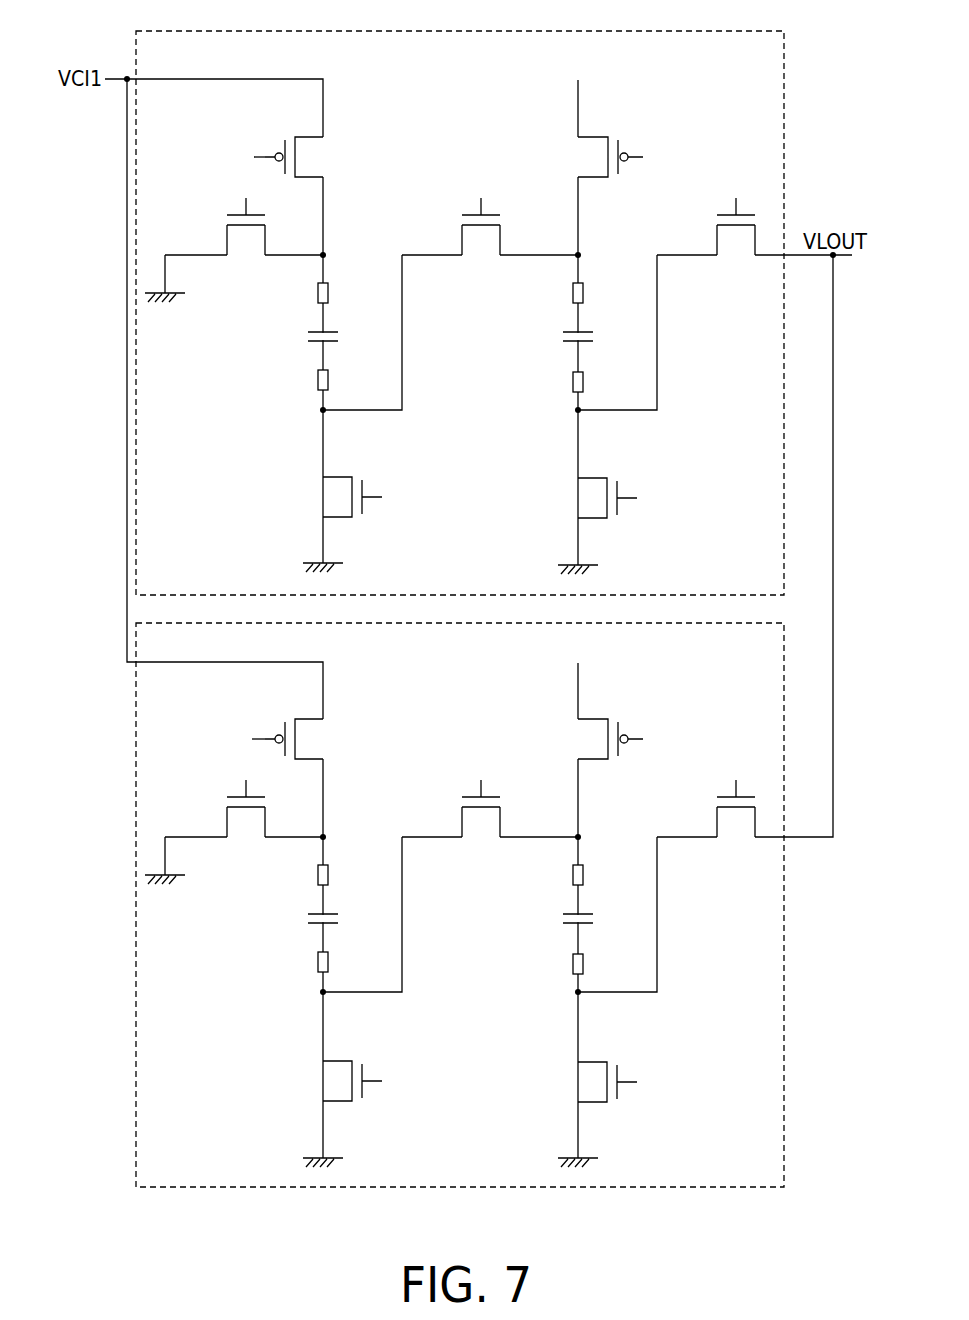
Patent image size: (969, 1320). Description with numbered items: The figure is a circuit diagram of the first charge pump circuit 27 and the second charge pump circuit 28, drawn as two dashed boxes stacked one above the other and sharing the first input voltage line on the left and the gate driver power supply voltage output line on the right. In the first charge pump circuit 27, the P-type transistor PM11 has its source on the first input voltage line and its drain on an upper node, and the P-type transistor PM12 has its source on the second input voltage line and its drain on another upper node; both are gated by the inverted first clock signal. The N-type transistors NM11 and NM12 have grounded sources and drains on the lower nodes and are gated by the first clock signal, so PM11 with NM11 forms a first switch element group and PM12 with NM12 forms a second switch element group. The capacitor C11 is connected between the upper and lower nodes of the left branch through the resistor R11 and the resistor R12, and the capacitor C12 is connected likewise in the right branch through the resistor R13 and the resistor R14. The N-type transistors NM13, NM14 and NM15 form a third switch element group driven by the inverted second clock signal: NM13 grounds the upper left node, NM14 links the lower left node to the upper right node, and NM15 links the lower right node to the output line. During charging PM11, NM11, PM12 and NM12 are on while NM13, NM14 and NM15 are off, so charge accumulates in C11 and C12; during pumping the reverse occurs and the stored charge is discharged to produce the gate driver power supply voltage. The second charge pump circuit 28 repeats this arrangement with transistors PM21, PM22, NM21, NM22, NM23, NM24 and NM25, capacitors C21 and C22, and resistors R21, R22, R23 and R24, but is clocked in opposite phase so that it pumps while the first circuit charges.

The first charge pump circuit 27 is at (785, 32).
The second charge pump circuit 28 is at (785, 623).
The transistor PM11 is at (320, 135).
The transistor PM12 is at (592, 136).
The transistor NM11 is at (337, 478).
The transistor NM12 is at (592, 478).
The transistor NM13 is at (228, 248).
The transistor NM14 is at (465, 244).
The transistor NM15 is at (717, 244).
The resistor R11 is at (329, 292).
The resistor R12 is at (329, 381).
The resistor R13 is at (584, 292).
The resistor R14 is at (584, 381).
The capacitor C11 is at (320, 337).
The capacitor C12 is at (574, 337).
The transistor PM21 is at (313, 717).
The transistor PM22 is at (587, 718).
The transistor NM21 is at (333, 1060).
The transistor NM22 is at (588, 1060).
The transistor NM23 is at (223, 830).
The transistor NM24 is at (460, 826).
The transistor NM25 is at (712, 826).
The resistor R21 is at (329, 874).
The resistor R22 is at (329, 963).
The resistor R23 is at (584, 874).
The resistor R24 is at (584, 963).
The capacitor C21 is at (320, 919).
The capacitor C22 is at (573, 919).